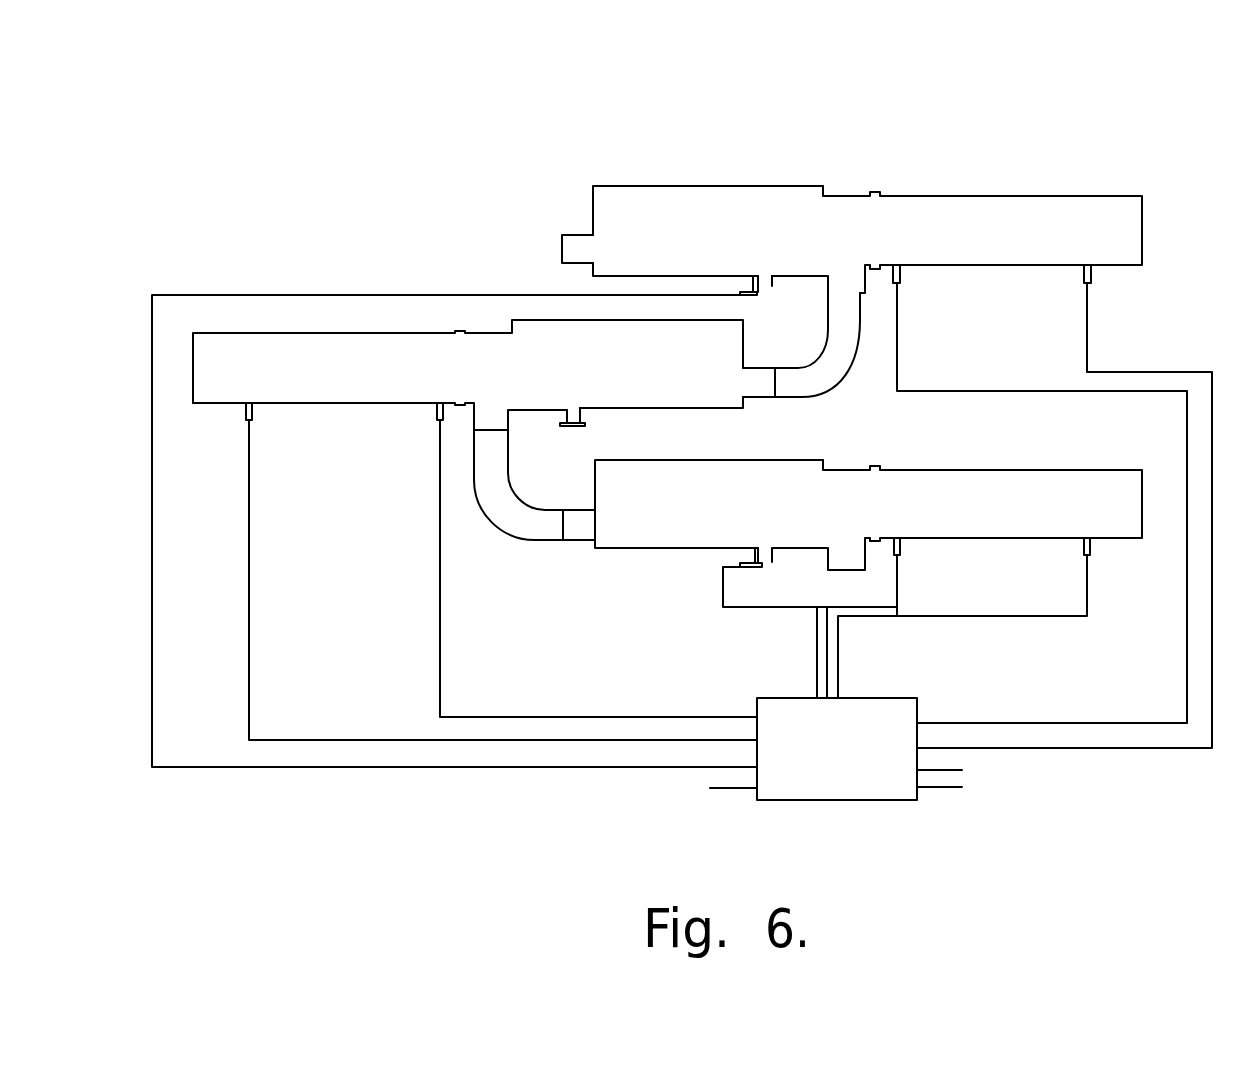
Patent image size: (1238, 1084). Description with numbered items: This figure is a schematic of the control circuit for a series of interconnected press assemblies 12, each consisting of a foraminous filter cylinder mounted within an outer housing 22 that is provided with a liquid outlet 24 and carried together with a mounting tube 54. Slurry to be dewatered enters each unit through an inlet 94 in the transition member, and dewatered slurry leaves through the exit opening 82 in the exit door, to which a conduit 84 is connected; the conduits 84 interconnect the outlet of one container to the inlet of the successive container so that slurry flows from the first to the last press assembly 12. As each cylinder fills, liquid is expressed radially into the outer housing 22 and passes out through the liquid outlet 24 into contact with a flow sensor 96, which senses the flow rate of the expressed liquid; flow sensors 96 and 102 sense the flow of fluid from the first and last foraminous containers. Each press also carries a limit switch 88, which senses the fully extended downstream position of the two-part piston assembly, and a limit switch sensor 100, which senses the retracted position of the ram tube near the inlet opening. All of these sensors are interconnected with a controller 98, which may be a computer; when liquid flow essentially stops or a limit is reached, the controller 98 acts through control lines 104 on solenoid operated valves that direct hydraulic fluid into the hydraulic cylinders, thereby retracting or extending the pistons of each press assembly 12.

The press assembly 12 is at (1160, 153).
The outer housing 22 is at (667, 186).
The liquid outlet 24 is at (773, 282).
The mounting tube 54 is at (1015, 196).
The exit opening 82 is at (570, 233).
The conduit 84 is at (852, 360).
The limit switch 88 is at (901, 275).
The inlet 94 is at (840, 570).
The flow sensor 96 is at (748, 568).
The controller 98 is at (837, 749).
The limit switch sensor 100 is at (1092, 275).
The flow sensor 102 is at (745, 297).
The control lines 104 is at (730, 788).